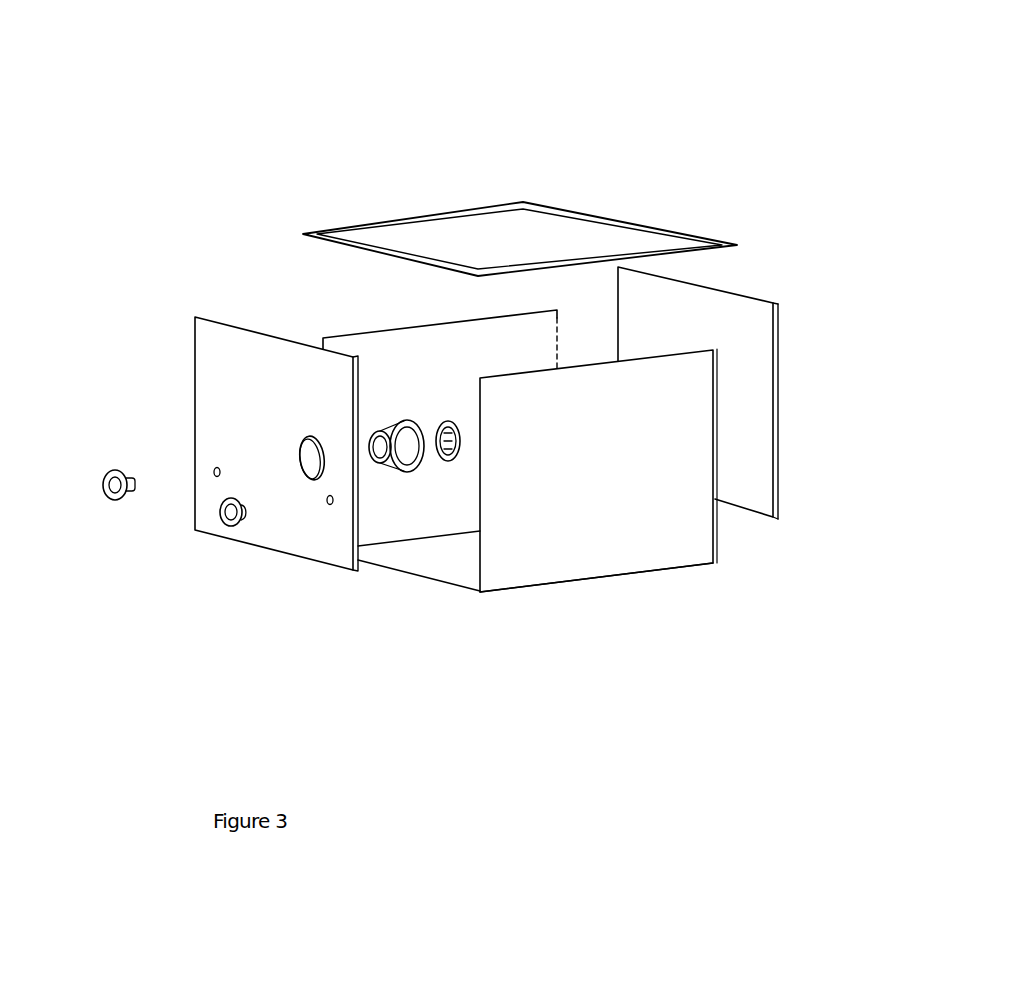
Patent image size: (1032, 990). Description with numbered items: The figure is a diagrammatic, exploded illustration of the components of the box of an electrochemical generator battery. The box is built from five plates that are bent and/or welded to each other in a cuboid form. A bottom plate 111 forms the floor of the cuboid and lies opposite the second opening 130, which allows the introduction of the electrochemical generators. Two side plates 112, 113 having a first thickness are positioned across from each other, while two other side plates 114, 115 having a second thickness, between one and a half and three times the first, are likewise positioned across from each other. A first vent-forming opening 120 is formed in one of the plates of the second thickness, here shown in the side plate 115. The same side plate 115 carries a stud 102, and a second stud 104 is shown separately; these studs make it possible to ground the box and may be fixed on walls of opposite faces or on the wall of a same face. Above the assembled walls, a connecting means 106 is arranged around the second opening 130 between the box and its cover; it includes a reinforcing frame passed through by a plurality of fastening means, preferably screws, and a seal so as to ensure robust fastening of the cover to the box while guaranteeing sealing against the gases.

The second opening 130 is at (548, 144).
The connecting means 106 is at (690, 232).
The side plate 114 is at (760, 300).
The side plate 113 is at (413, 343).
The bottom plate 111 is at (417, 575).
The side plate 112 is at (577, 557).
The side plate 115 is at (210, 499).
The vent-forming opening 120 is at (305, 478).
The stud 102 is at (178, 566).
The stud 104 is at (113, 500).